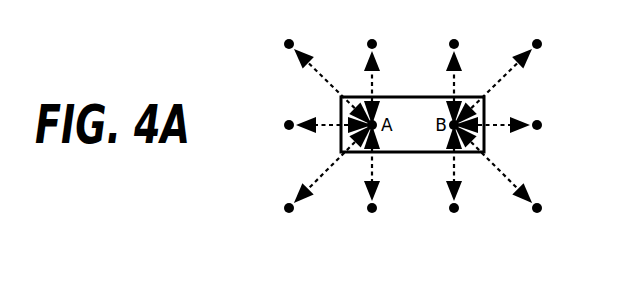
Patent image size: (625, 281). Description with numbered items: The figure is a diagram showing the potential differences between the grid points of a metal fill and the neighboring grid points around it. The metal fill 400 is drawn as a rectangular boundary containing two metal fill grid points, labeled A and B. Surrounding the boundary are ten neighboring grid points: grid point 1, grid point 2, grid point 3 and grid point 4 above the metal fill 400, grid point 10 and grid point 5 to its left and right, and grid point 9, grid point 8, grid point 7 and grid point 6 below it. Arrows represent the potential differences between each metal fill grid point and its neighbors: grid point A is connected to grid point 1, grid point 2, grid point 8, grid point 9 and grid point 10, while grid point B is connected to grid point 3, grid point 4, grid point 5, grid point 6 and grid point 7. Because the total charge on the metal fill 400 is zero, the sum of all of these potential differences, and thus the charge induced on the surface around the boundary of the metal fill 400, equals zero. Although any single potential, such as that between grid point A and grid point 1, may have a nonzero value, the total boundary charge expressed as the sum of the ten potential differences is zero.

The metal fill 400 is at (317, 84).
The grid point 1 is at (328, 71).
The grid point 2 is at (372, 71).
The grid point 3 is at (454, 71).
The grid point 4 is at (499, 71).
The grid point 5 is at (507, 125).
The grid point 6 is at (500, 181).
The grid point 7 is at (454, 181).
The grid point 8 is at (372, 181).
The grid point 9 is at (328, 181).
The grid point 10 is at (314, 125).